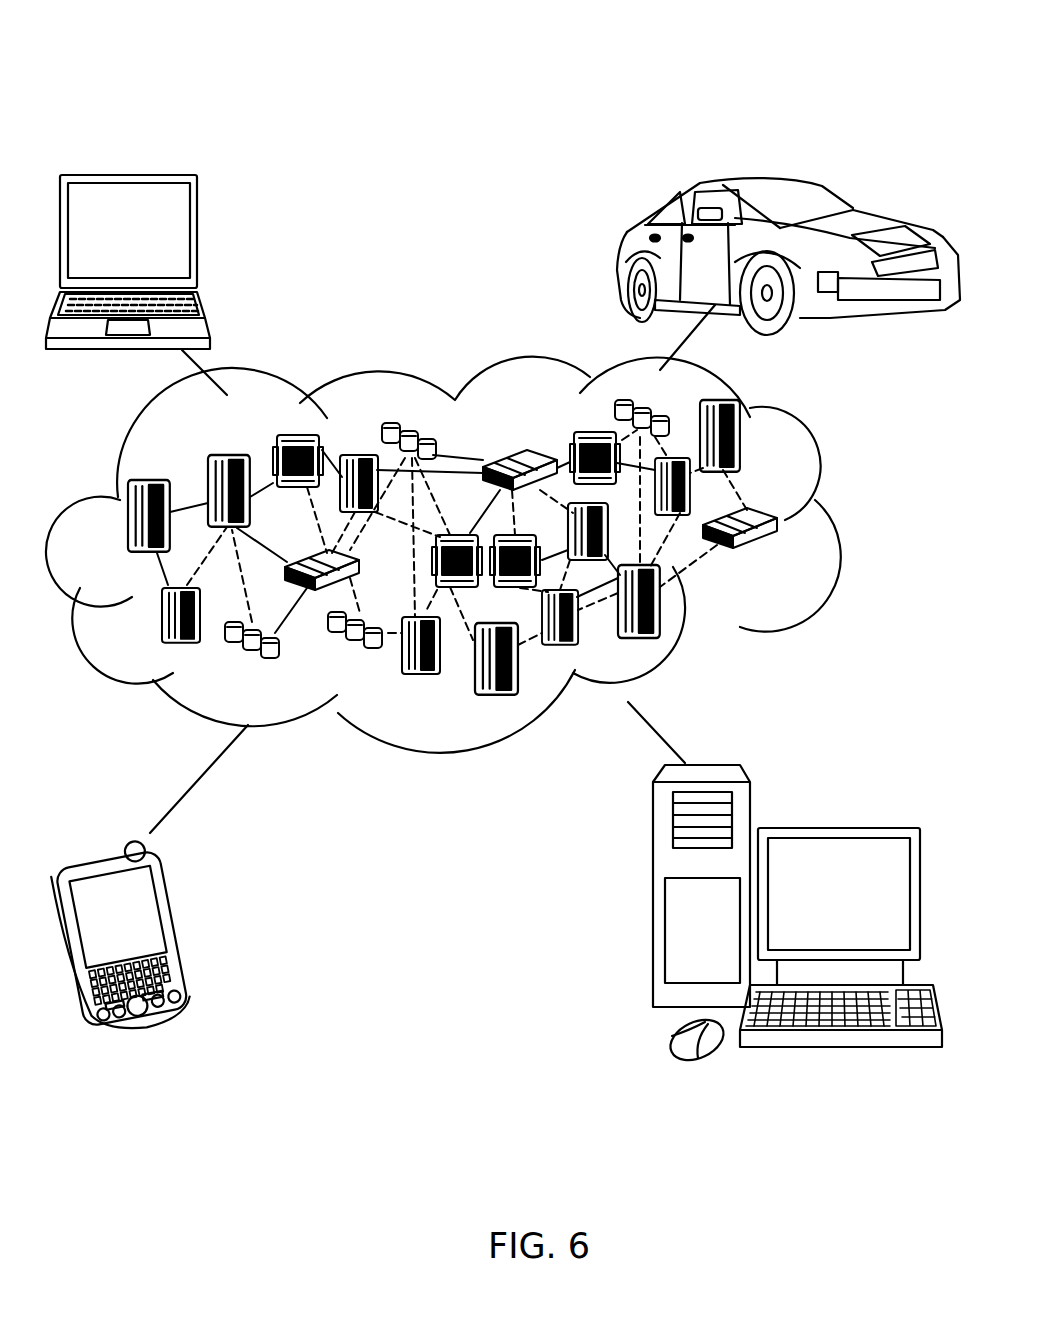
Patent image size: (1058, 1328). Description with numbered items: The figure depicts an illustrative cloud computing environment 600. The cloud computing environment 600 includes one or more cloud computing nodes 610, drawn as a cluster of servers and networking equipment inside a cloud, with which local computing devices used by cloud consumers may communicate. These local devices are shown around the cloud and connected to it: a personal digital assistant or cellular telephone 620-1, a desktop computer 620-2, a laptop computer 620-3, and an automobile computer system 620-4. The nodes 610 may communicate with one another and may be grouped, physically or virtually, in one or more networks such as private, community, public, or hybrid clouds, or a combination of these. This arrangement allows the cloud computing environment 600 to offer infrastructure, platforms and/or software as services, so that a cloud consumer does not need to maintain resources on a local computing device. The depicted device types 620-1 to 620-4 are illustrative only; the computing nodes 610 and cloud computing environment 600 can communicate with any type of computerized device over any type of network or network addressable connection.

The cloud computing environment 600 is at (780, 33).
The cloud computing nodes 610 is at (778, 555).
The personal digital assistant or cellular telephone 620-1 is at (187, 927).
The desktop computer 620-2 is at (848, 804).
The laptop computer 620-3 is at (197, 241).
The automobile computer system 620-4 is at (621, 257).